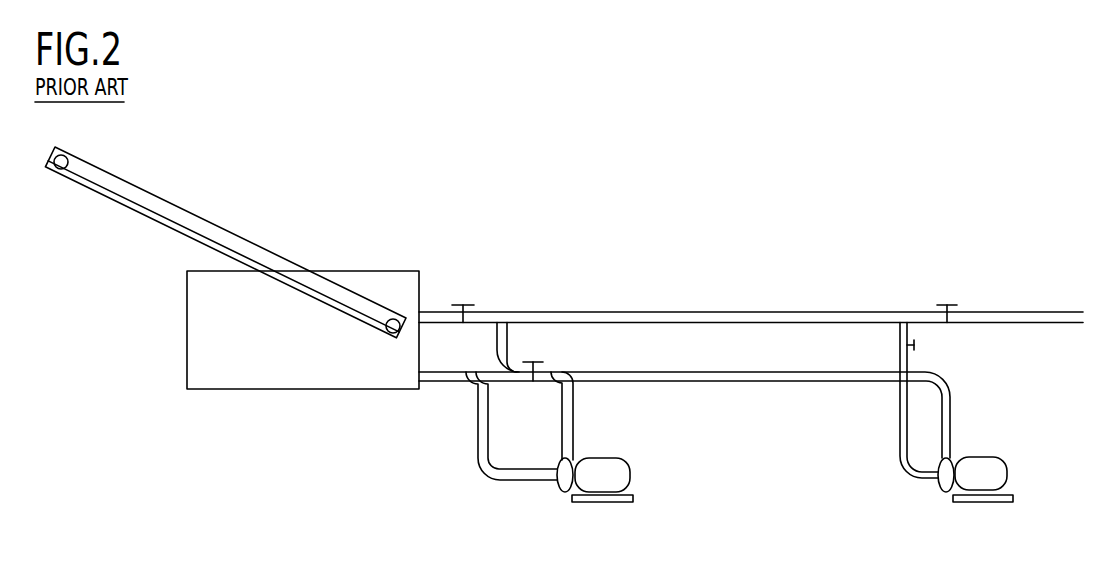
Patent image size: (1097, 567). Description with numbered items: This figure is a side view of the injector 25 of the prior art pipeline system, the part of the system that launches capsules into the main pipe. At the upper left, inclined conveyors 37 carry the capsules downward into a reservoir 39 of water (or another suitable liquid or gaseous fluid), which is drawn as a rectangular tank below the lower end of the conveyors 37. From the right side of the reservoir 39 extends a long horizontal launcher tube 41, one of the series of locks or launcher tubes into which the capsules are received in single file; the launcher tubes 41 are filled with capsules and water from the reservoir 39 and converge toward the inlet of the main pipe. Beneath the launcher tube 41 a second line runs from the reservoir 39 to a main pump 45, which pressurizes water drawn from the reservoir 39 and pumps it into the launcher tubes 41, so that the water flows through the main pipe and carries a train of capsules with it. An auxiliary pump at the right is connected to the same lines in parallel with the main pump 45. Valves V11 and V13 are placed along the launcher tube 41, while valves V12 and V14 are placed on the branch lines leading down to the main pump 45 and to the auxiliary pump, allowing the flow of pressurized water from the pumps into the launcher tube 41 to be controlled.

The injector 25 is at (500, 228).
The conveyors 37 is at (128, 208).
The reservoir 39 is at (225, 372).
The launcher tubes 41 is at (700, 312).
The main pump 45 is at (620, 458).
The valve V11 is at (464, 299).
The valve V12 is at (534, 357).
The valve V13 is at (952, 299).
The valve V14 is at (884, 347).